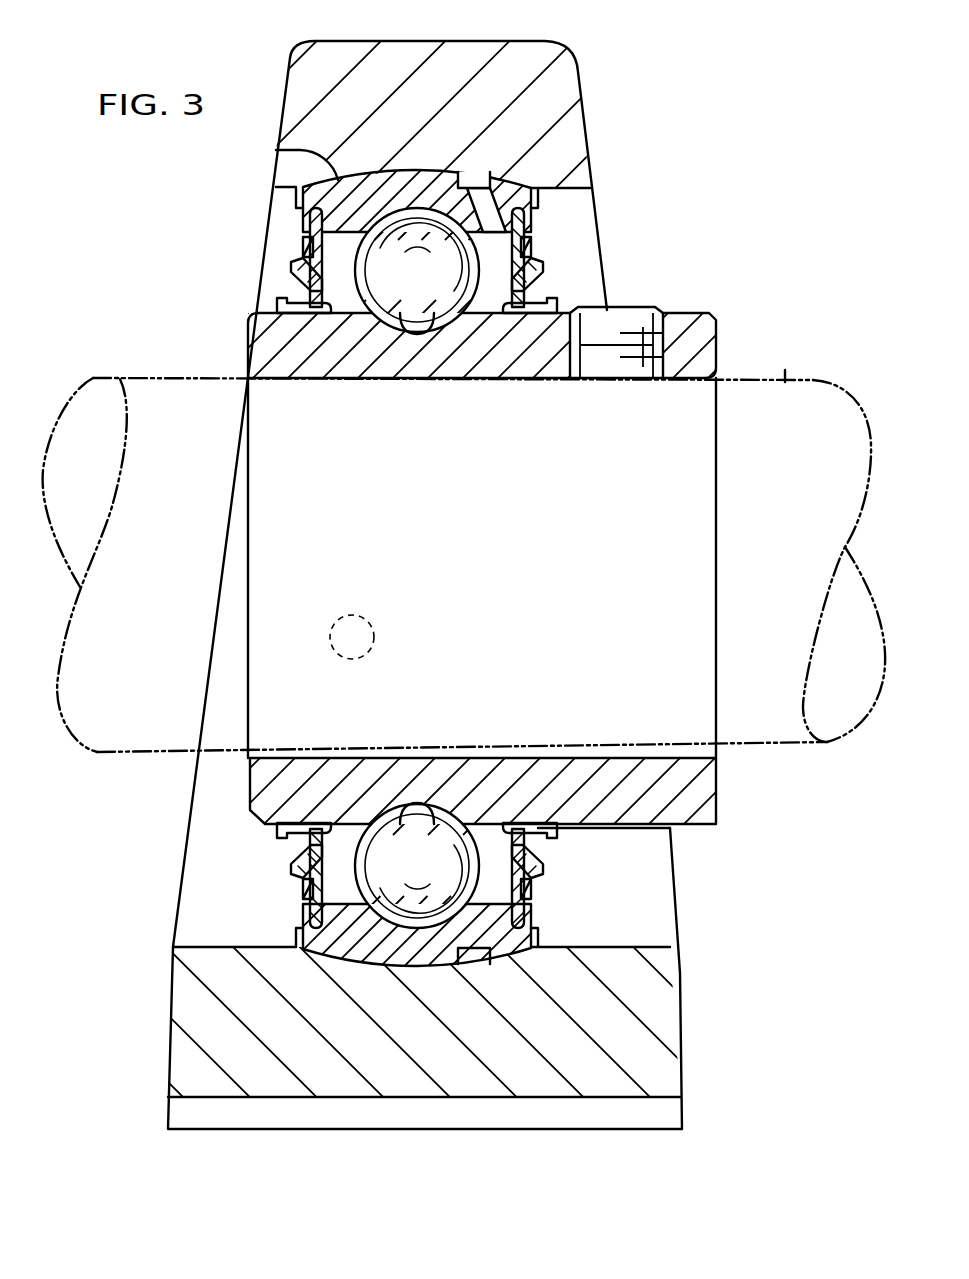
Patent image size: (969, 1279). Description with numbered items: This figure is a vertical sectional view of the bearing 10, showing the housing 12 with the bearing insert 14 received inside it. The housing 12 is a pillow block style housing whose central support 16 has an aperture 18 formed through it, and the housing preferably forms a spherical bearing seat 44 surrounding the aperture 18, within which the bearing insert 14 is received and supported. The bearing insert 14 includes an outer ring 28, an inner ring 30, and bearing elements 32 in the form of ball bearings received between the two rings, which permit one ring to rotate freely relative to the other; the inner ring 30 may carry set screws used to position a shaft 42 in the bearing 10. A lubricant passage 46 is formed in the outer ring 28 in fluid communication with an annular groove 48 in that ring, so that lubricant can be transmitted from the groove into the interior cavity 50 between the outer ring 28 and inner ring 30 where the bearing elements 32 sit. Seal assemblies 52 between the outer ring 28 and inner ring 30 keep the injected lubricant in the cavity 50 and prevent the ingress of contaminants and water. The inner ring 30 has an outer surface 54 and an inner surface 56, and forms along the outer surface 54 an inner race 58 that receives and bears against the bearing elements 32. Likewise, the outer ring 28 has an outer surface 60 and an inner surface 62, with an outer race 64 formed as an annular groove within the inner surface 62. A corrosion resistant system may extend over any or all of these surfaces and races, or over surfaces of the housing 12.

The bearing 10 is at (681, 182).
The housing 12 is at (581, 86).
The bearing insert 14 is at (618, 289).
The central support 16 is at (587, 141).
The aperture 18 is at (278, 216).
The outer ring 28 is at (313, 942).
The inner ring 30 is at (260, 800).
The bearing elements 32 is at (390, 873).
The shaft 42 is at (787, 376).
The spherical bearing seat 44 is at (375, 170).
The lubricant passage 46 is at (525, 205).
The annular groove 48 is at (481, 178).
The interior cavity 50 is at (488, 835).
The seal assemblies 52 is at (292, 287).
The outer surface 54 is at (697, 315).
The inner surface 56 is at (700, 384).
The inner race 58 is at (418, 322).
The outer surface 60 is at (276, 155).
The inner surface 62 is at (300, 258).
The outer race 64 is at (412, 208).